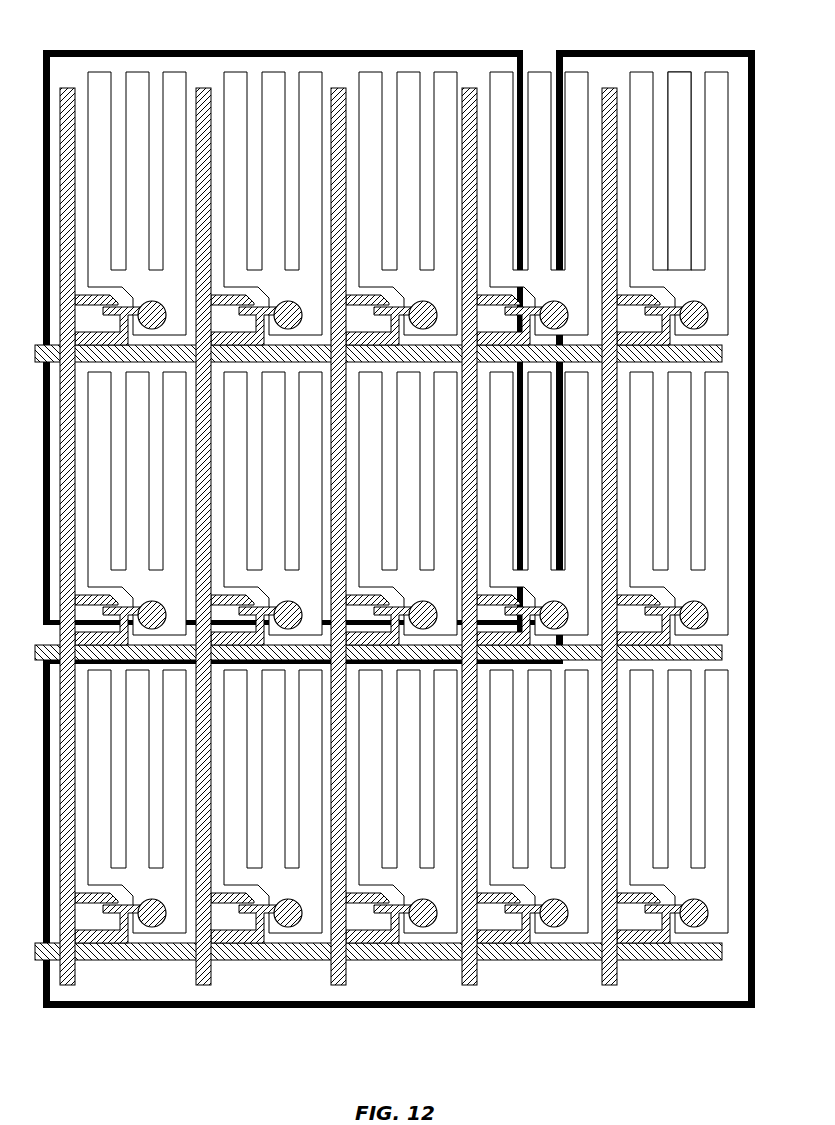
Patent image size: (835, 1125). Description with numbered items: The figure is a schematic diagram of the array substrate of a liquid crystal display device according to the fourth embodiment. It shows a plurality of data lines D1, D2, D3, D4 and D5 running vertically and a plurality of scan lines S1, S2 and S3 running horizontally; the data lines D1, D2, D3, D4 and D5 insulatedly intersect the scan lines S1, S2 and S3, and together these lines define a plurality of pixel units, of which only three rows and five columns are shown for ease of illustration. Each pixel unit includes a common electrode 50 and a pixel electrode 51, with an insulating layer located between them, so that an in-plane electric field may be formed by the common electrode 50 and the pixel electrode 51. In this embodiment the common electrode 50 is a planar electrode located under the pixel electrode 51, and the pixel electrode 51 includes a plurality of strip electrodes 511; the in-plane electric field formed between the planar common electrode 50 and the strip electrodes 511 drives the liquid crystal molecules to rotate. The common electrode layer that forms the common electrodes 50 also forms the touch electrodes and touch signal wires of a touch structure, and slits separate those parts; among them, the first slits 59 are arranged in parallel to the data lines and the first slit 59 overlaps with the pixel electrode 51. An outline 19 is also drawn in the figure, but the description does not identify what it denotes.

The data line D1 is at (65, 93).
The data line D2 is at (200, 93).
The data line D3 is at (338, 93).
The data line D4 is at (472, 95).
The data line D5 is at (608, 95).
The scan line S1 is at (38, 351).
The scan line S2 is at (36, 651).
The scan line S3 is at (36, 950).
The frame line 19 is at (268, 58).
The first slit 59 is at (538, 95).
The pixel electrode 51 is at (698, 176).
The strip electrode 511 is at (676, 100).
The common electrode 50 is at (400, 507).